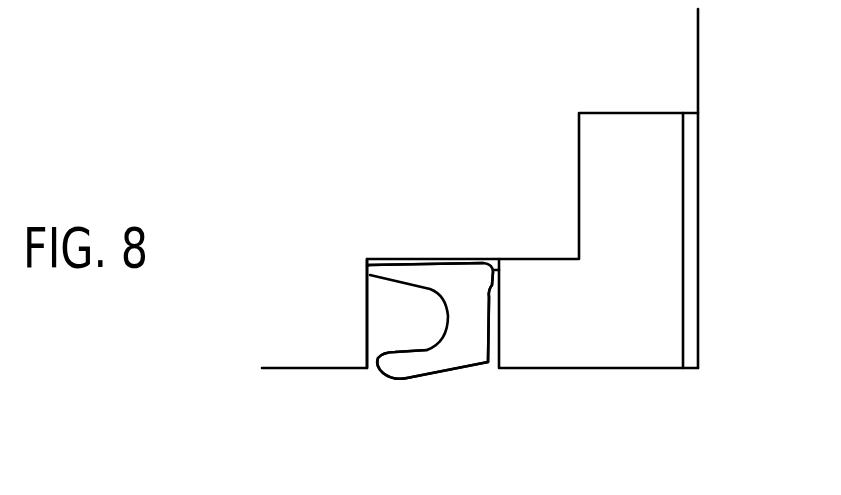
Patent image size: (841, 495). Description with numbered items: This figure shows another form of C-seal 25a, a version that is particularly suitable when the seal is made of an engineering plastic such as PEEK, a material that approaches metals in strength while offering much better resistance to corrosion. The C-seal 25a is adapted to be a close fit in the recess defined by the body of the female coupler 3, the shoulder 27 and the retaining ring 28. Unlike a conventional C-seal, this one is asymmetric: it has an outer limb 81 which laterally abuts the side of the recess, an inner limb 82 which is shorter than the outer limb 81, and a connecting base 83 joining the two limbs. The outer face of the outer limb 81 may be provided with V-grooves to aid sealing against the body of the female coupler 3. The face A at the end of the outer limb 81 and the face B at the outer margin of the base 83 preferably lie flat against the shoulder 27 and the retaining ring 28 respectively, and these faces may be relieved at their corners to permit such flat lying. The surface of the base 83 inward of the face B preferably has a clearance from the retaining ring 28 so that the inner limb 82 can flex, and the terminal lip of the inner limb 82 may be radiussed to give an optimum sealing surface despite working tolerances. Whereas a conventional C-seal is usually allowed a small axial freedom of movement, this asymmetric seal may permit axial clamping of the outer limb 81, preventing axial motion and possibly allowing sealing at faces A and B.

The female coupler 3 is at (524, 101).
The C-seal 25a is at (444, 405).
The shoulder 27 is at (368, 313).
The retaining ring 28 is at (698, 222).
The outer limb 81 is at (415, 265).
The inner limb 82 is at (465, 370).
The connecting base 83 is at (478, 315).
The face A is at (367, 267).
The face B is at (497, 271).